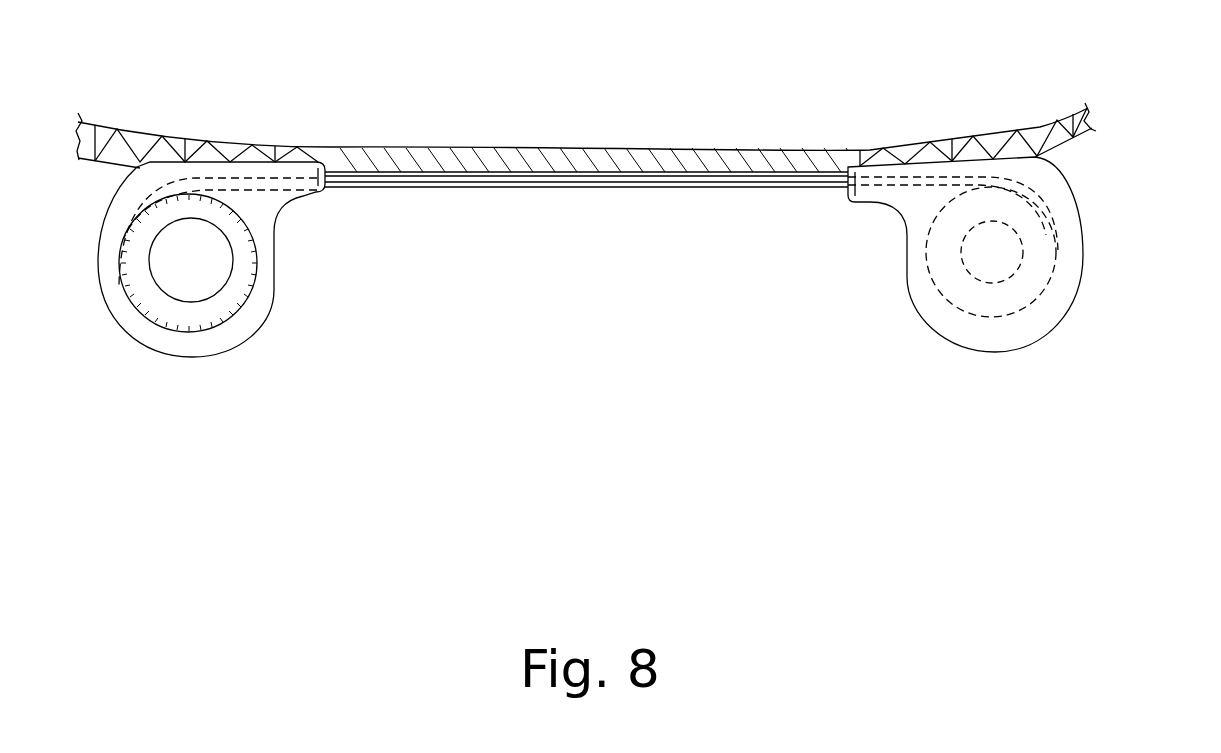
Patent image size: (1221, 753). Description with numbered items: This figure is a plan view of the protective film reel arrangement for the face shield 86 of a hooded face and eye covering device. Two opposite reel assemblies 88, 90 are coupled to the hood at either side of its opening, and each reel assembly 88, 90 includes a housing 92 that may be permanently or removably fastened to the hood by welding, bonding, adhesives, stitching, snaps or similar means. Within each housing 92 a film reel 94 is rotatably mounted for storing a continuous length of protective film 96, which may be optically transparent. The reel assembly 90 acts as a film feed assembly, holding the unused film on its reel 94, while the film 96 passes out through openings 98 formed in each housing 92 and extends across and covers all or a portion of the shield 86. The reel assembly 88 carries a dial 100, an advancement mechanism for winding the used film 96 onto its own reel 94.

The face shield 86 is at (698, 147).
The reel assembly 88 is at (245, 300).
The reel assembly 90 is at (998, 247).
The housing 92 is at (1083, 258).
The film reel 94 is at (1050, 218).
The protective film 96 is at (563, 185).
The openings 98 is at (335, 190).
The dial 100 is at (202, 315).